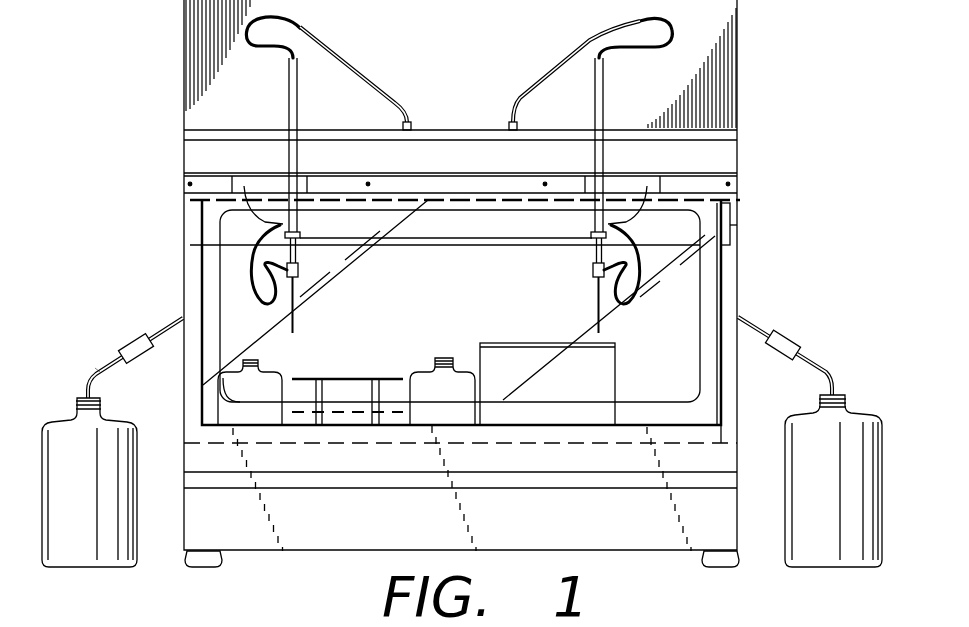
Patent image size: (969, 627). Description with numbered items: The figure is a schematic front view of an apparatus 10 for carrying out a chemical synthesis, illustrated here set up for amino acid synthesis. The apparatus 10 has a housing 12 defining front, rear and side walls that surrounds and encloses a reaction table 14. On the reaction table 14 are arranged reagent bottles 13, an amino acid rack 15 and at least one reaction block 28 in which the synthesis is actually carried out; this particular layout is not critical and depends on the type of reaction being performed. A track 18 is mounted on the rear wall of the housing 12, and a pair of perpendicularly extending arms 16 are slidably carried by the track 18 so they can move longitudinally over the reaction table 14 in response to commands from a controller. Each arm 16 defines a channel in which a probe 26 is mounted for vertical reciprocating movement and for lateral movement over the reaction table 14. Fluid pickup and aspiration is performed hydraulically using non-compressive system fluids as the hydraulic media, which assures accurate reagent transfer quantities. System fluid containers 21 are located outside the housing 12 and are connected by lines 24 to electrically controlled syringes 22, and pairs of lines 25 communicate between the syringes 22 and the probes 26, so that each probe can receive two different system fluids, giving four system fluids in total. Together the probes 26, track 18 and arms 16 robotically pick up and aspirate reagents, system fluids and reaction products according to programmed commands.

The apparatus 10 is at (148, 66).
The housing 12 is at (184, 271).
The reagent bottles 13 is at (266, 374).
The reaction table 14 is at (215, 462).
The amino acid rack 15 is at (364, 378).
The arms 16 is at (302, 218).
The track 18 is at (243, 184).
The system fluid containers 21 is at (55, 420).
The syringes 22 is at (137, 342).
The lines 24 is at (95, 372).
The pairs of lines 25 is at (336, 50).
The probes 26 is at (296, 318).
The reaction block 28 is at (530, 344).